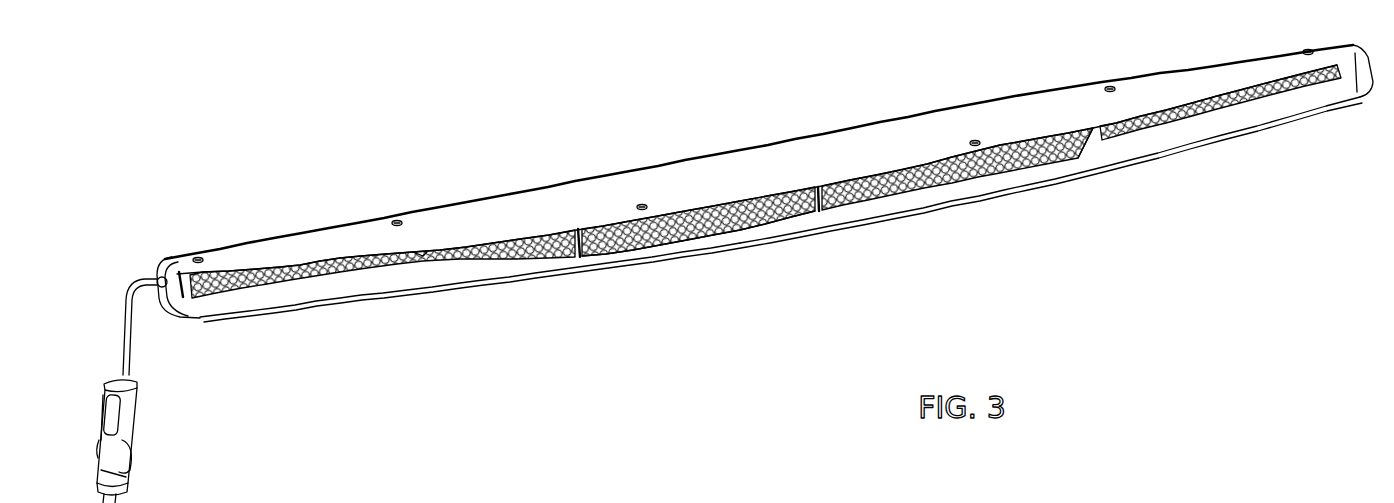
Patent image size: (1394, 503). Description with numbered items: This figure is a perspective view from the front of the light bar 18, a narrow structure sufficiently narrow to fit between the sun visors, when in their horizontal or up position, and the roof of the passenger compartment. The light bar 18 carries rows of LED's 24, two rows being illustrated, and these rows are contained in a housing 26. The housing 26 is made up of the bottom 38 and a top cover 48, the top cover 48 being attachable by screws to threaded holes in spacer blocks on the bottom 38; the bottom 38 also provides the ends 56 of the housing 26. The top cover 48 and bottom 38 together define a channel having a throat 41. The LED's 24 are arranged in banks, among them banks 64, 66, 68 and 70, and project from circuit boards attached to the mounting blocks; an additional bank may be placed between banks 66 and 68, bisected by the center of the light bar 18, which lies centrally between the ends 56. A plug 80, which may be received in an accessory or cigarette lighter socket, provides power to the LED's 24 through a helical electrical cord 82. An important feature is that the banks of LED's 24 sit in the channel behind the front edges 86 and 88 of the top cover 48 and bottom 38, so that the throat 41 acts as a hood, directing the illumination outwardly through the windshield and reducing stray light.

The light bar 18 is at (765, 207).
The LED's 24 is at (613, 250).
The housing 26 is at (995, 99).
The bottom 38 is at (969, 204).
The throat 41 is at (357, 288).
The top cover 48 is at (827, 160).
The ends 56 is at (178, 289).
The bank 64 is at (512, 258).
The bank 66 is at (692, 237).
The bank 68 is at (877, 200).
The bank 70 is at (1077, 158).
The plug 80 is at (136, 425).
The helical electrical cord 82 is at (126, 295).
The front edge 86 is at (423, 248).
The front edge 88 is at (288, 311).